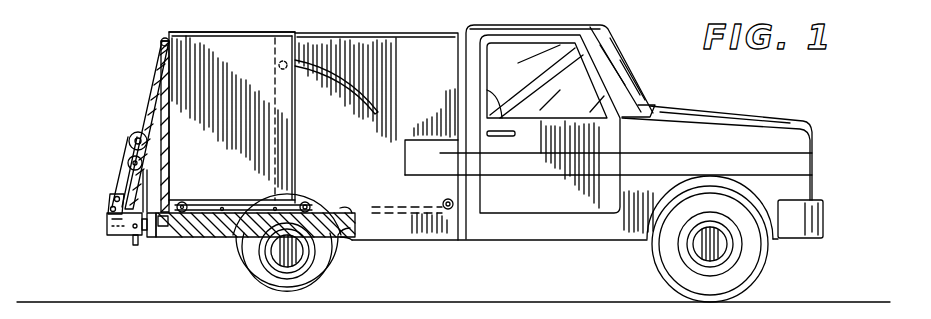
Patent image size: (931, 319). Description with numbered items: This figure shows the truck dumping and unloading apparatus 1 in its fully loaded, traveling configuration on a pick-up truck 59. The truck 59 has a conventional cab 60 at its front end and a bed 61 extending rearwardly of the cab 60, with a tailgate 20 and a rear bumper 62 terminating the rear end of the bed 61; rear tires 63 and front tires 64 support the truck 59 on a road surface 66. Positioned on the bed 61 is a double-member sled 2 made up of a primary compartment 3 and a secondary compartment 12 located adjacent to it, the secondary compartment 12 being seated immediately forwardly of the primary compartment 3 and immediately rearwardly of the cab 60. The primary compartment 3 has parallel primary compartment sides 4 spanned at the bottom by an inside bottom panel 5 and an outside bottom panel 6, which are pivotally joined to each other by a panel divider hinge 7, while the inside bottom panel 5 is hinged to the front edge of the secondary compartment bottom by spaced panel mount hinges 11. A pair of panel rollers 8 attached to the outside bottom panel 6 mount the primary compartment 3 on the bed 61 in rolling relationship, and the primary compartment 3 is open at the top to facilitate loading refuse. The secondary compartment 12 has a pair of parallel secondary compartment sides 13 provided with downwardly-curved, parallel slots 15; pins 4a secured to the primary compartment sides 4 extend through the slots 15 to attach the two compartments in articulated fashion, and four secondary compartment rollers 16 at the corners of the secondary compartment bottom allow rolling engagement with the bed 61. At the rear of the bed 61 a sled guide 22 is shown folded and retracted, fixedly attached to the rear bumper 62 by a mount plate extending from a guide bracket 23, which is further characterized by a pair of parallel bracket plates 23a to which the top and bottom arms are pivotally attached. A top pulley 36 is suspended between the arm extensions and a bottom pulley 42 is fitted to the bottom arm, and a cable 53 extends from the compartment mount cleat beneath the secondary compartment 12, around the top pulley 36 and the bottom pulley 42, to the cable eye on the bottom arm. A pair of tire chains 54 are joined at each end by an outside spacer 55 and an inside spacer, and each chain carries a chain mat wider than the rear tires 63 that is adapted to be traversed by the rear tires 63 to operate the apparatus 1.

The truck dumping and unloading apparatus 1 is at (102, 91).
The double-member sled 2 is at (216, 54).
The primary compartment 3 is at (236, 183).
The primary compartment sides 4 is at (224, 133).
The pins 4a is at (279, 61).
The inside bottom panel 5 is at (270, 204).
The outside bottom panel 6 is at (218, 205).
The panel divider hinge 7 is at (181, 238).
The panel rollers 8 is at (187, 204).
The panel mount hinges 11 is at (298, 200).
The secondary compartment 12 is at (392, 32).
The secondary compartment sides 13 is at (435, 75).
The slots 15 is at (352, 84).
The secondary compartment rollers 16 is at (311, 203).
The tailgate 20 is at (170, 190).
The sled guide 22 is at (108, 175).
The guide bracket 23 is at (118, 240).
The bracket plates 23a is at (107, 224).
The top pulley 36 is at (136, 132).
The bottom pulley 42 is at (128, 160).
The cable 53 is at (114, 190).
The tire chains 54 is at (160, 89).
The outside spacer 55 is at (161, 42).
The pick-up truck 59 is at (680, 104).
The cab 60 is at (605, 30).
The bed 61 is at (357, 237).
The rear bumper 62 is at (151, 238).
The rear tires 63 is at (315, 270).
The front tires 64 is at (670, 262).
The road surface 66 is at (515, 283).